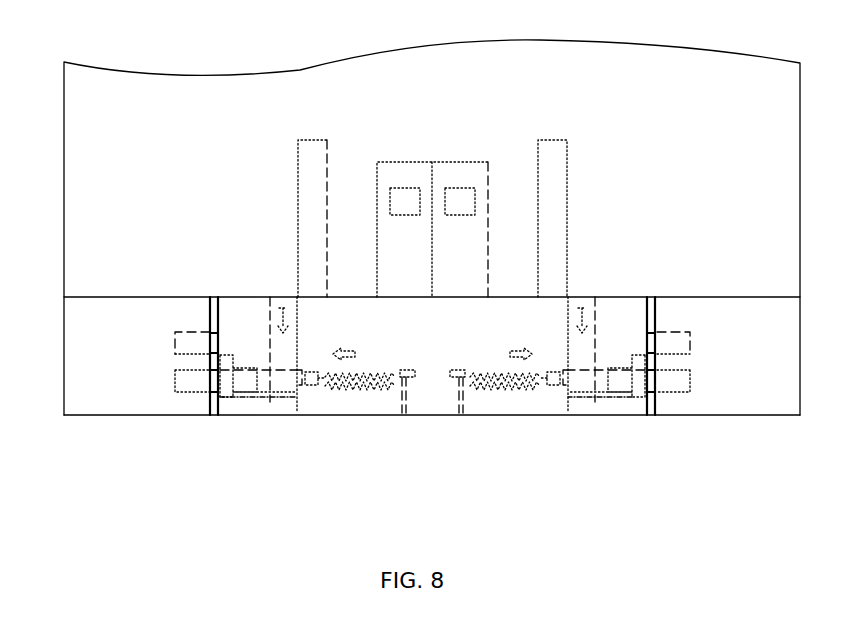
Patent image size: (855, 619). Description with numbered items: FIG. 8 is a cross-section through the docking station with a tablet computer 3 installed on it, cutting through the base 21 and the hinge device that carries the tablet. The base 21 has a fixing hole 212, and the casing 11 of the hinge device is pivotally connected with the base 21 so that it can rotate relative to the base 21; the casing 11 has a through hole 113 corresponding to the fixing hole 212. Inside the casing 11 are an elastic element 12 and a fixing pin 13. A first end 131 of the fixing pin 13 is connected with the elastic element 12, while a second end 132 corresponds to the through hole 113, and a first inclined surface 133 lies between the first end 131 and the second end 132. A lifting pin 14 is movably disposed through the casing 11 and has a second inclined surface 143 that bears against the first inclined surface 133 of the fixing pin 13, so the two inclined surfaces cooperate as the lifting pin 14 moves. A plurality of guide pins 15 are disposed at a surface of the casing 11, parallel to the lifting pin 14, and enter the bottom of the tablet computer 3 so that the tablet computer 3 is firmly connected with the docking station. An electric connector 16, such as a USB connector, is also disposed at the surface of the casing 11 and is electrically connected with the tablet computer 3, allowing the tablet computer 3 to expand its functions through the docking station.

The tablet computer 3 is at (117, 70).
The base 21 is at (80, 340).
The casing 11 is at (352, 297).
The guide pins 15 is at (298, 142).
The electric connector 16 is at (452, 162).
The fixing hole 212 is at (172, 377).
The first inclined surface 133 is at (248, 368).
The lifting pin 14 is at (297, 346).
The second inclined surface 143 is at (263, 410).
The first end 131 is at (306, 392).
The elastic element 12 is at (376, 392).
The second end 132 is at (190, 393).
The through hole 113 is at (208, 392).
The fixing pin 13 is at (236, 396).